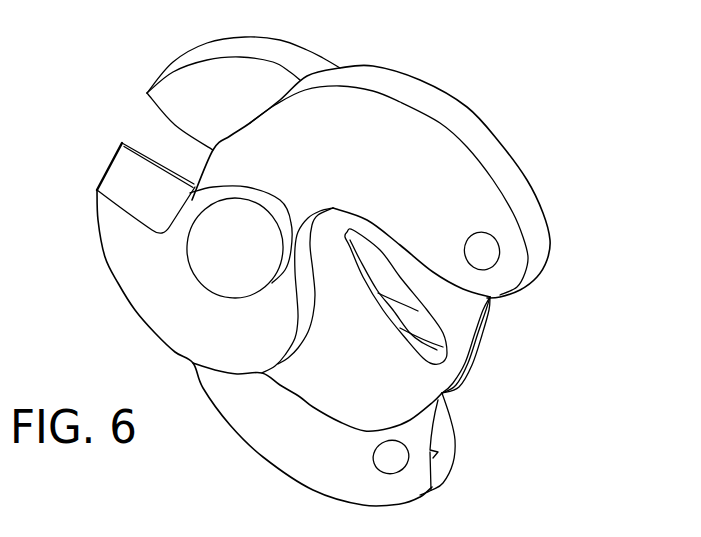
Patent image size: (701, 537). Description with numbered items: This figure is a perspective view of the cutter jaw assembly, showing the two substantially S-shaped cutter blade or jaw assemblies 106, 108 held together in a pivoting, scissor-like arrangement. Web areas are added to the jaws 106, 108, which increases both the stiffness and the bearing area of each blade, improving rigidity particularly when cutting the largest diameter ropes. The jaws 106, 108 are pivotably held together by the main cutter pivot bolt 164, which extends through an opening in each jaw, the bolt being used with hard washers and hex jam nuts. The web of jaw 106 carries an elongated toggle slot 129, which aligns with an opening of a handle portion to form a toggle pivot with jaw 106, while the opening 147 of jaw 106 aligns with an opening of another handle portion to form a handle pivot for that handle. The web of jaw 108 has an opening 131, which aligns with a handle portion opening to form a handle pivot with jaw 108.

The cutter blade or jaw assembly 106 is at (433, 147).
The cutter blade or jaw assembly 108 is at (192, 88).
The elongated toggle slot 129 is at (413, 308).
The opening 131 is at (397, 463).
The opening 147 is at (495, 238).
The main cutter pivot bolt 164 is at (223, 270).